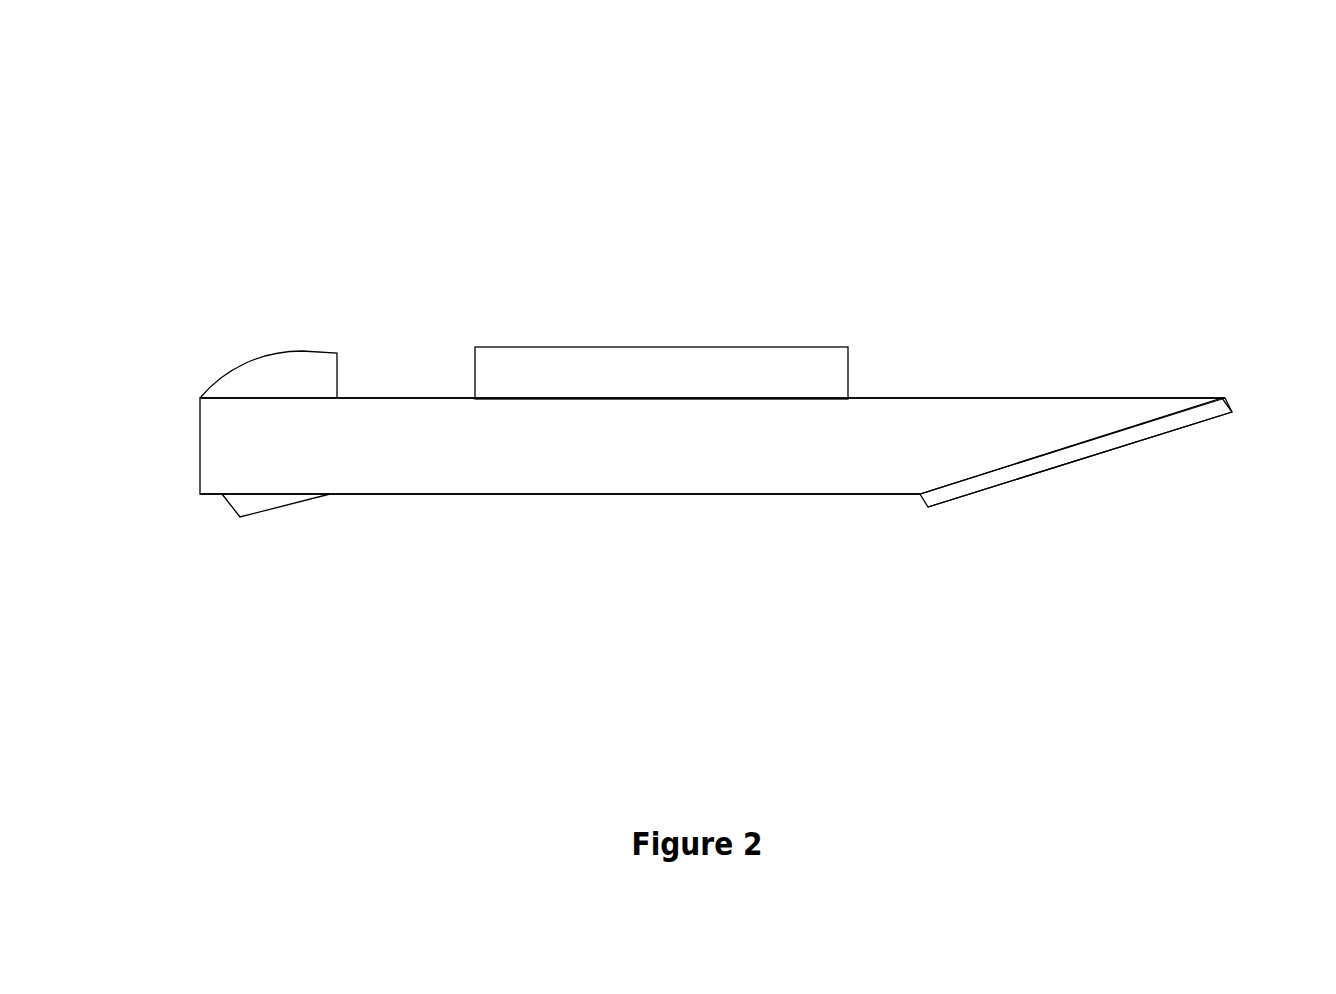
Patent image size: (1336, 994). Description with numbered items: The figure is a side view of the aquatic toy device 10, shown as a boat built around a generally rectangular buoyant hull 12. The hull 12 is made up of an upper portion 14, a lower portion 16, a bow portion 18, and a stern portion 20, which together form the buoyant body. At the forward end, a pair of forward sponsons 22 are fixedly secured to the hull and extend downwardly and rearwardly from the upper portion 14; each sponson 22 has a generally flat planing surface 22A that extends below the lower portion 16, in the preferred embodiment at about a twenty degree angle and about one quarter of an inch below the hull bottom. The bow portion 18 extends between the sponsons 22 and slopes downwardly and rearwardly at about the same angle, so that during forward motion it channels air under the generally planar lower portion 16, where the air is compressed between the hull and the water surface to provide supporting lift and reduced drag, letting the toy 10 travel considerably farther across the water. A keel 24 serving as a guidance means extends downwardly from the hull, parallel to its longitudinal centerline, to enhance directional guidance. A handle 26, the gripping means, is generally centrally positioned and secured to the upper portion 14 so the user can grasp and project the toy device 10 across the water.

The aquatic toy device 10 is at (464, 114).
The buoyant hull 12 is at (919, 378).
The upper portion 14 is at (995, 398).
The lower portion 16 is at (643, 496).
The bow portion 18 is at (1221, 398).
The stern portion 20 is at (200, 398).
The forward sponsons 22 is at (1233, 407).
The planing surface 22A is at (1057, 468).
The keel 24 is at (254, 518).
The handle 26 is at (662, 347).